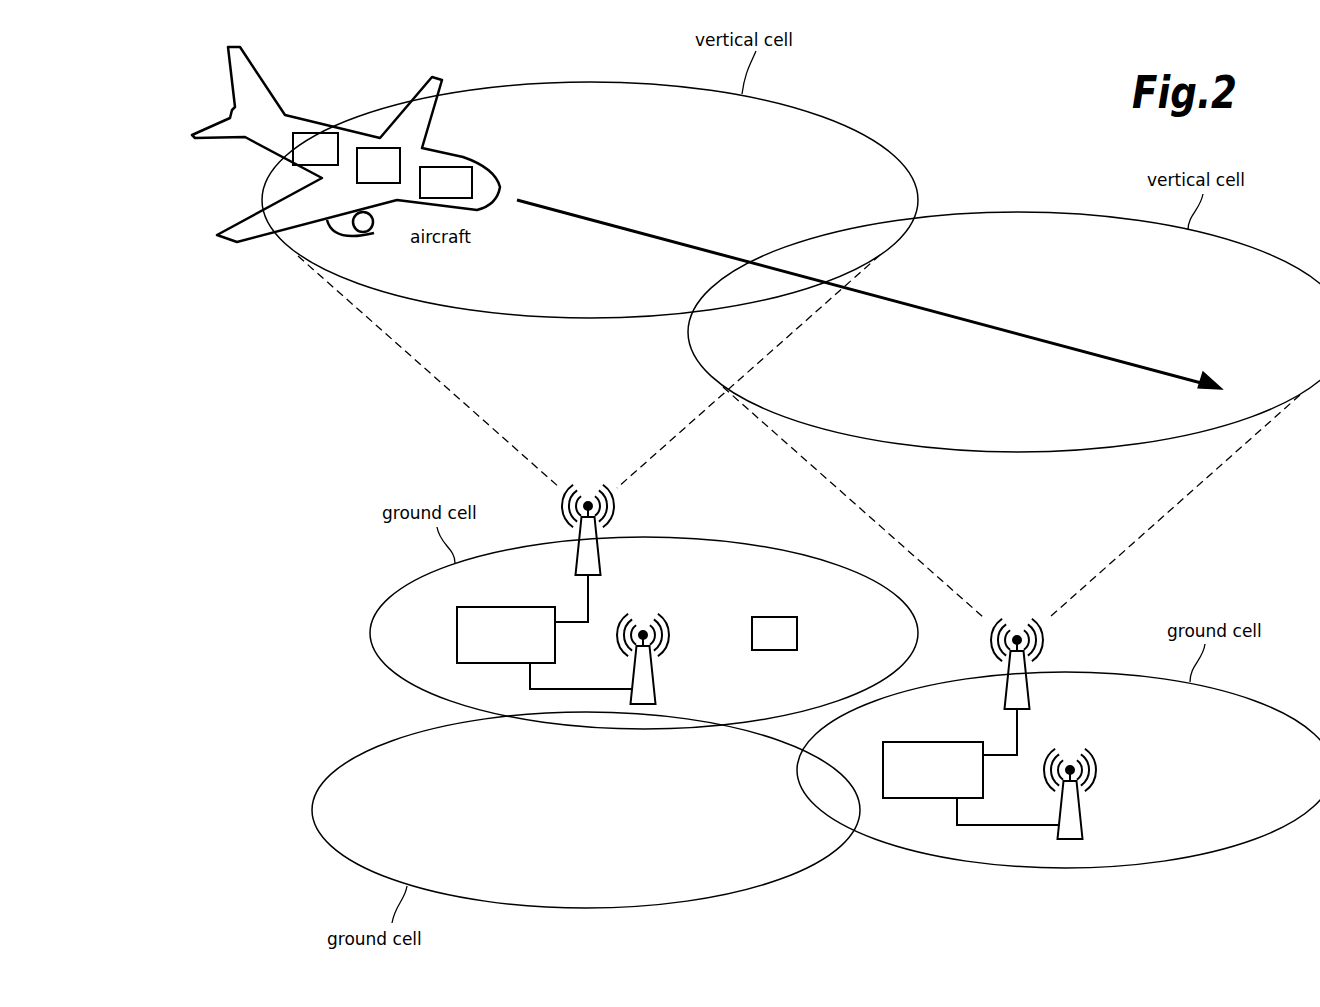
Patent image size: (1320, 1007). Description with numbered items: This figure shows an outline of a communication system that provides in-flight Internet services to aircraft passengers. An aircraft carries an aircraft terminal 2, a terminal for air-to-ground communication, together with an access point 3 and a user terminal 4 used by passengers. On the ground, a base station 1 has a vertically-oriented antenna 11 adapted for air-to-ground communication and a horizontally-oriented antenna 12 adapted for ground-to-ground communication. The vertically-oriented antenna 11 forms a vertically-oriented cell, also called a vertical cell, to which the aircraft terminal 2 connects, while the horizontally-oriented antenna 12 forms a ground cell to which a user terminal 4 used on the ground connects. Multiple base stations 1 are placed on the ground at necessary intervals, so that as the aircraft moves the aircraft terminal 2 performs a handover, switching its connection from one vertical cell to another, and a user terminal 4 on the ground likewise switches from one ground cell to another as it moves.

The base station 1 is at (517, 607).
The aircraft terminal 2 is at (452, 167).
The access point 3 is at (374, 148).
The user terminal 4 is at (308, 133).
The vertically-oriented antenna 11 is at (603, 562).
The horizontally-oriented antenna 12 is at (657, 688).